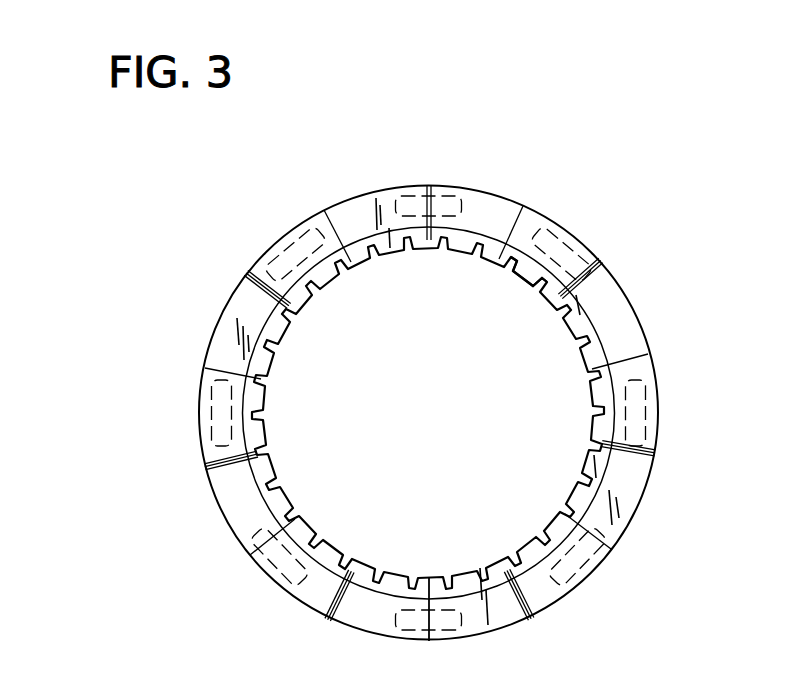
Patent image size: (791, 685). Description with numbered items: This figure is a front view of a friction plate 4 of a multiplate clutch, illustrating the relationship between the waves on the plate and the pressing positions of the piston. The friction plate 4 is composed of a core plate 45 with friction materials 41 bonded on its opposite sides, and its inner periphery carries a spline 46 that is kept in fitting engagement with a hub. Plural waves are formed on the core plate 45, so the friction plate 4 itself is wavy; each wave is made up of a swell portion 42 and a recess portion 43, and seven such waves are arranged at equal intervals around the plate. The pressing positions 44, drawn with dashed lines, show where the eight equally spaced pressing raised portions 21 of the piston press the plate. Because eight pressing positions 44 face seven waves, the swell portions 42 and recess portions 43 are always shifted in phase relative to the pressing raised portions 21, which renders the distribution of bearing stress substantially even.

The friction plate 4 is at (470, 388).
The pressing raised portions 21 is at (595, 245).
The friction materials 41 is at (493, 208).
The swell portions 42 is at (650, 452).
The recess portions 43 is at (642, 353).
The pressing positions 44 is at (643, 405).
The core plate 45 is at (528, 265).
The spline 46 is at (457, 240).